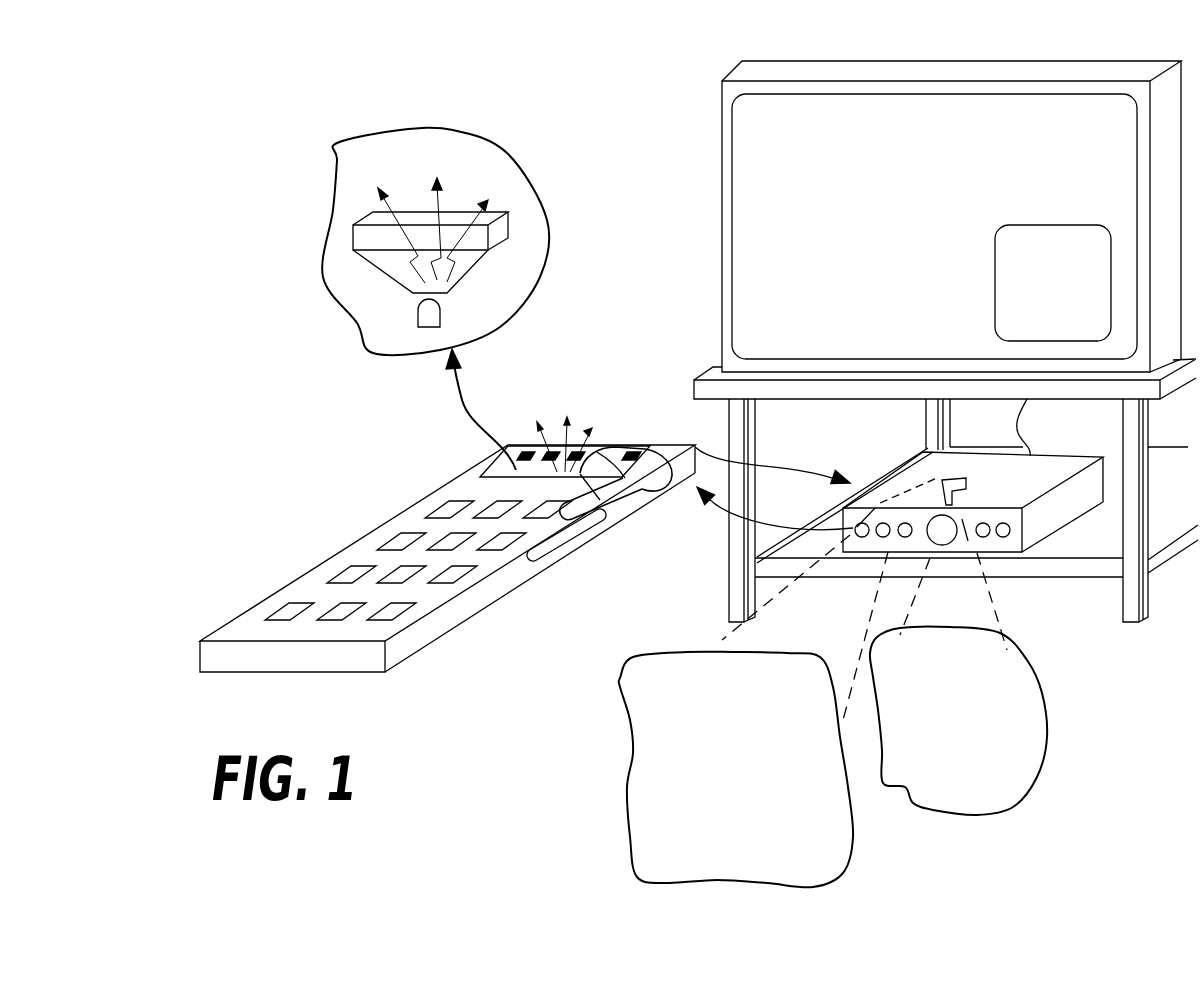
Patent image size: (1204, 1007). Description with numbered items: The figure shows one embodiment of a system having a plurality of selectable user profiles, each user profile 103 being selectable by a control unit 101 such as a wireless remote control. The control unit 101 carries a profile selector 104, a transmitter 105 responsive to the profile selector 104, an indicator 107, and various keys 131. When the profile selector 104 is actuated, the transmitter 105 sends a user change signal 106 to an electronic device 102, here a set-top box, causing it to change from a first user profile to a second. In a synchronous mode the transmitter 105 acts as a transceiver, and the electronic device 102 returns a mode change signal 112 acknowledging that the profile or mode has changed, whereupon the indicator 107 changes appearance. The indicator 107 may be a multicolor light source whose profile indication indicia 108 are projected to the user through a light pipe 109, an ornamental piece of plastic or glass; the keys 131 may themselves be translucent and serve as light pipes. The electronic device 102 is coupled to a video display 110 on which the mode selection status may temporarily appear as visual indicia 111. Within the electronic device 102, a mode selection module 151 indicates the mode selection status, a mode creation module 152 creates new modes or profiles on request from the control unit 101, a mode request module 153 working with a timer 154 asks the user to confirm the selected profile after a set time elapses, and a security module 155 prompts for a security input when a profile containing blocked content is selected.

The control unit 101 is at (357, 540).
The electronic device 102 is at (1045, 521).
The user profile 103 is at (1002, 668).
The profile selector 104 is at (593, 523).
The transmitter 105 is at (648, 490).
The user change signal 106 is at (795, 465).
The indicator 107 is at (503, 464).
The profile indication indicia 108 is at (584, 424).
The light pipe 109 is at (372, 247).
The video display 110 is at (997, 74).
The visual indicia 111 is at (994, 265).
The mode change signal 112 is at (787, 522).
The keys 131 is at (413, 606).
The mode selection module 151 is at (627, 678).
The mode creation module 152 is at (643, 767).
The mode request module 153 is at (643, 813).
The timer 154 is at (700, 835).
The security module 155 is at (663, 860).